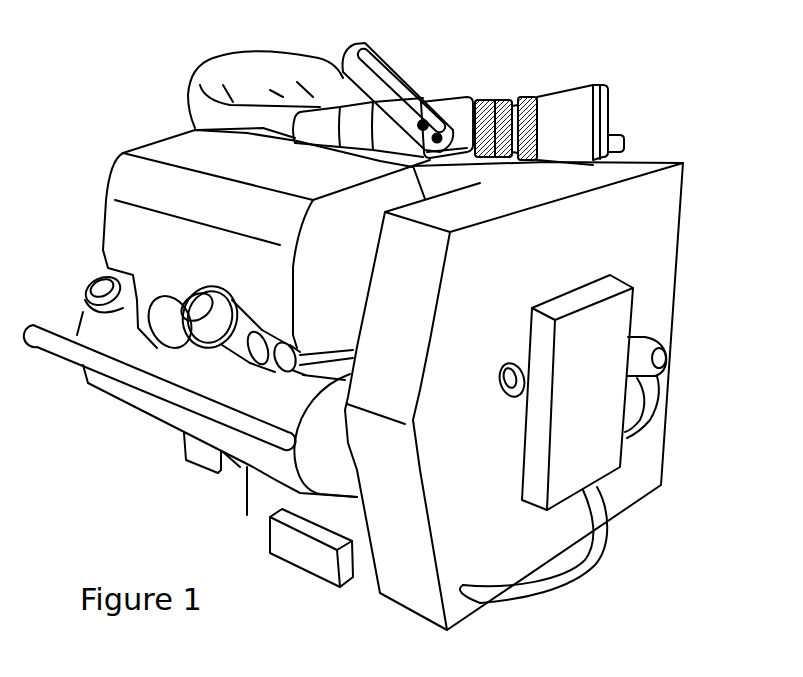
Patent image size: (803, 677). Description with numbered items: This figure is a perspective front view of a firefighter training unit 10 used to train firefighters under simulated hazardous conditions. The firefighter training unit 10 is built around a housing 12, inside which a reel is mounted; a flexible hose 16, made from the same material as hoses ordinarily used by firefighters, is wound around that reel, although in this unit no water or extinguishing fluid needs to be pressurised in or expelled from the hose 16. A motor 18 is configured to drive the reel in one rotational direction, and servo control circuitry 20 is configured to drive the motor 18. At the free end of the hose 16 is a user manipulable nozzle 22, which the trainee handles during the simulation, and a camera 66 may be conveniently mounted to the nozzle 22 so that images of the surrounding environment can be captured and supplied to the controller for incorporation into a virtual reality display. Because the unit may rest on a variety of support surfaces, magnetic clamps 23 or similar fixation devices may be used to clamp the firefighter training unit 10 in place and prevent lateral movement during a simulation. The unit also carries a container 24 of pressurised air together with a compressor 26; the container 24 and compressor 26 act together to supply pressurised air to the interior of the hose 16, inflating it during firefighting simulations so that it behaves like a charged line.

The firefighter training unit 10 is at (677, 93).
The housing 12 is at (650, 238).
The flexible hose 16 is at (247, 75).
The motor 18 is at (680, 460).
The servo control circuitry 20 is at (577, 437).
The user manipulable nozzle 22 is at (617, 100).
The magnetic clamps 23 is at (303, 563).
The container of pressurised air 24 is at (160, 410).
The compressor 26 is at (130, 235).
The camera 66 is at (627, 135).